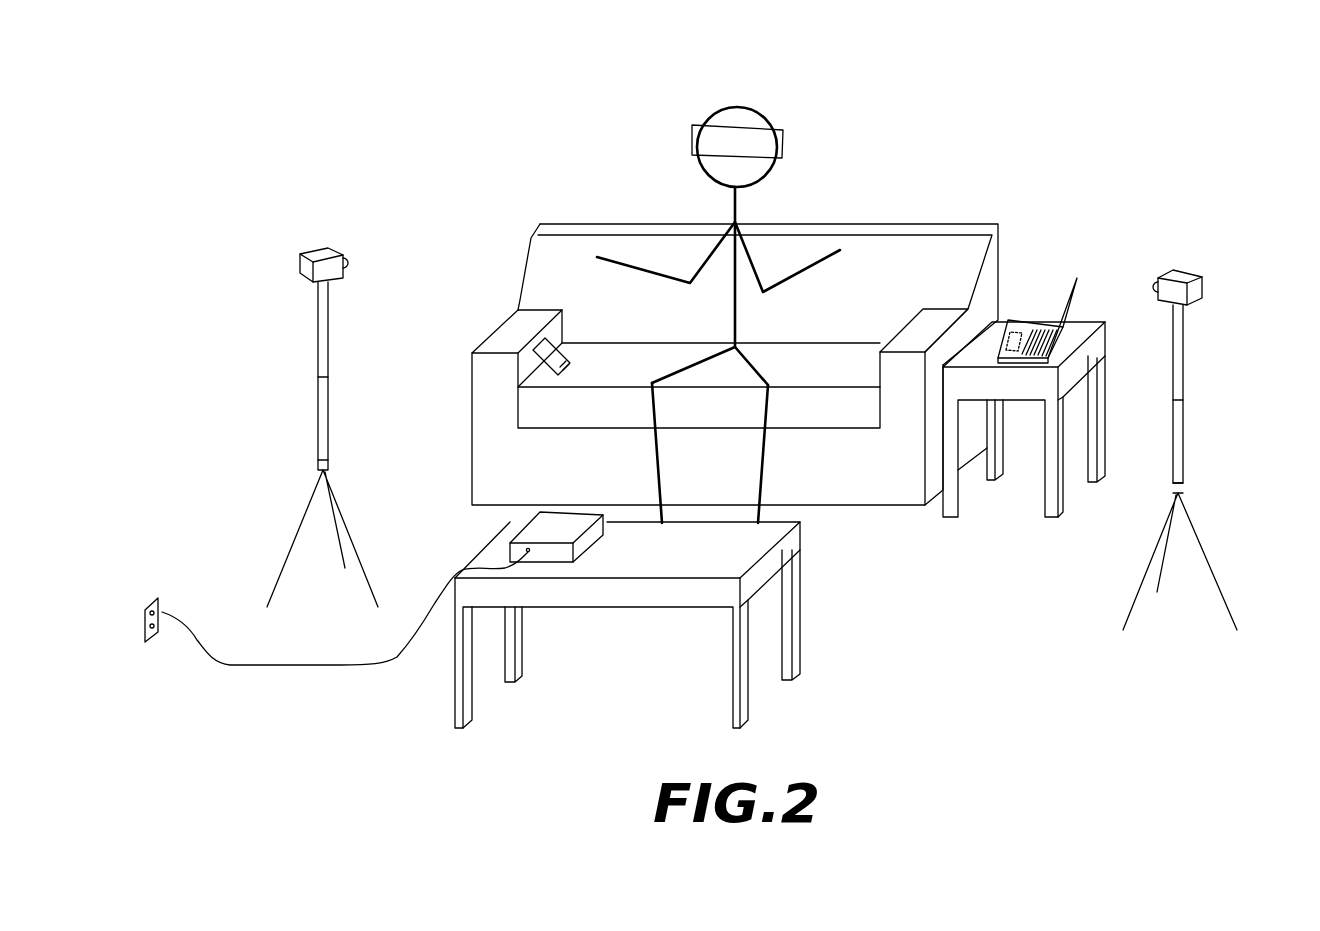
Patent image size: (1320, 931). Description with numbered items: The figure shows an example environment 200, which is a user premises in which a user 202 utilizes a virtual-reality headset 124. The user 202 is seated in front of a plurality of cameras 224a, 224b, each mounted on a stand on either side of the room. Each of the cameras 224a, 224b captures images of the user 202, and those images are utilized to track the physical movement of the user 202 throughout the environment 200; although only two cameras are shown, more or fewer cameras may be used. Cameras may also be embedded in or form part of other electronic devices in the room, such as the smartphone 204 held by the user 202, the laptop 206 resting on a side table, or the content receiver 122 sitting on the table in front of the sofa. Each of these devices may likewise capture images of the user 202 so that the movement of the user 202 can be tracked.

The environment 200 is at (1224, 109).
The user 202 is at (728, 226).
The virtual-reality headset 124 is at (698, 143).
The smartphone 204 is at (543, 338).
The laptop 206 is at (1075, 282).
The content receiver 122 is at (545, 522).
The camera 224a is at (320, 250).
The camera 224b is at (1188, 272).